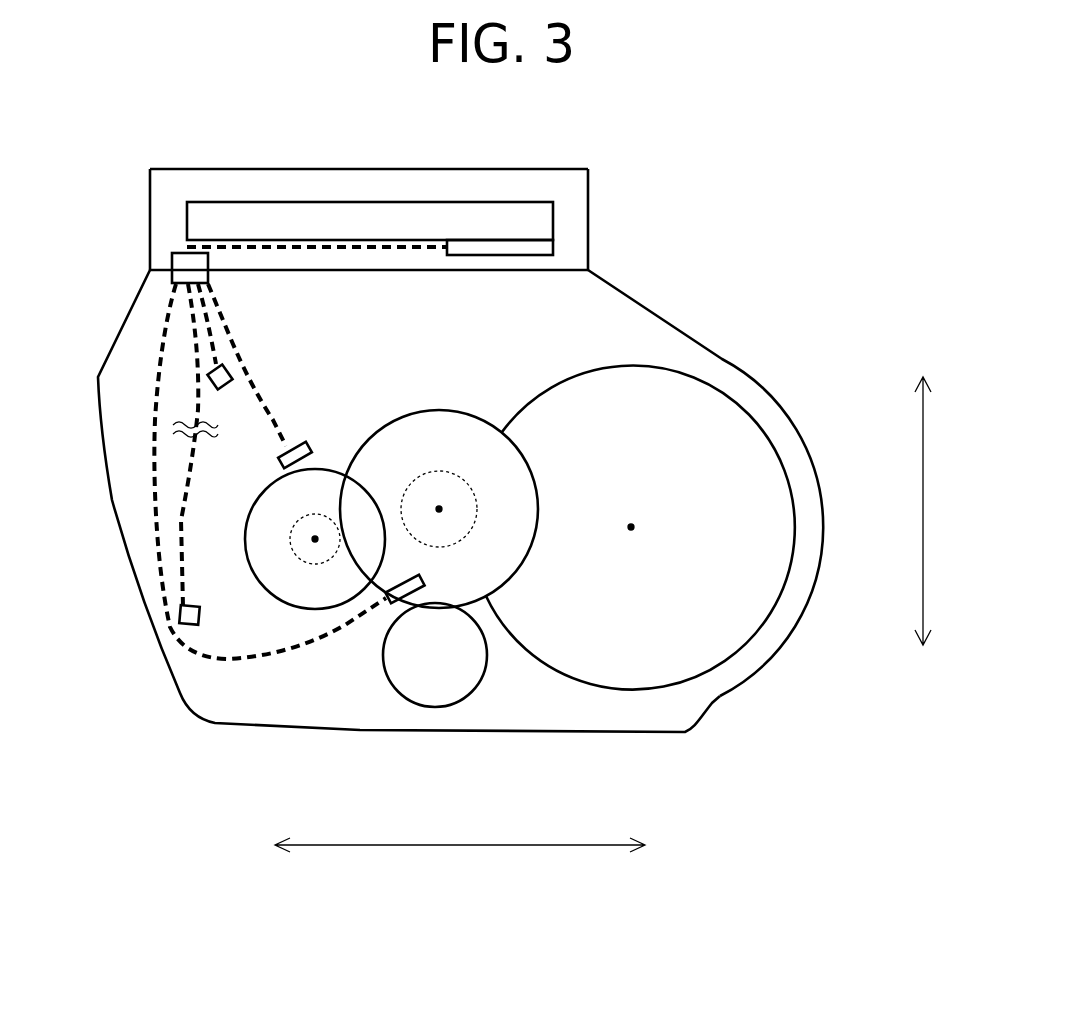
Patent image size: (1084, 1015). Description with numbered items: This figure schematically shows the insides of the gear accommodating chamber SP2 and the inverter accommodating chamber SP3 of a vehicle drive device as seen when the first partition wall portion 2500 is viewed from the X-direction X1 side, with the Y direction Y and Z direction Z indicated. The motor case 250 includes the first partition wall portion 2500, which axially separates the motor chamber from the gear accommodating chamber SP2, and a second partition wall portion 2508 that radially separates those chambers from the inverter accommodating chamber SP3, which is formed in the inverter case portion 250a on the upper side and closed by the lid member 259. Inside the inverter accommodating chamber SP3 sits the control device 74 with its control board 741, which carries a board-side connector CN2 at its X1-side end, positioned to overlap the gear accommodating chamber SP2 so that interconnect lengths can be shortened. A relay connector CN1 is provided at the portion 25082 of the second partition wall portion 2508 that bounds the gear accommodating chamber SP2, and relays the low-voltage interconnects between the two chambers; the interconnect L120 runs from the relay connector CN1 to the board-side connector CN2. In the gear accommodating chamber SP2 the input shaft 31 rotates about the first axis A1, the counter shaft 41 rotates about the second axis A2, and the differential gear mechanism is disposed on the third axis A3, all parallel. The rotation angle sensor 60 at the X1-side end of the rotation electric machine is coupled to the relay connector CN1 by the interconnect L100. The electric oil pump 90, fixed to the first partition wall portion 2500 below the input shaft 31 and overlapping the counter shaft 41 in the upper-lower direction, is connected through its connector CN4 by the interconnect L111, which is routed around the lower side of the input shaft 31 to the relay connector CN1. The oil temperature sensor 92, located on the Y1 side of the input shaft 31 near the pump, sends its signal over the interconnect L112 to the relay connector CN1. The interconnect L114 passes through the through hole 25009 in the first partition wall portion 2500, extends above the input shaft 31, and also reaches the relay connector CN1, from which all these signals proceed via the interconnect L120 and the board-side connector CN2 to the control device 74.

The lid member 259 is at (218, 168).
The portion of the second partition wall portion 25082 is at (322, 267).
The second partition wall portion 2508 is at (467, 186).
The control board 741 is at (495, 218).
The control device 74 is at (392, 180).
The inverter case portion 250a is at (590, 182).
The motor case 250 is at (688, 528).
The board-side connector CN2 is at (545, 250).
The inverter accommodating chamber SP3 is at (570, 250).
The interconnect L120 is at (388, 284).
The gear accommodating chamber SP2 is at (392, 332).
The relay connector CN1 is at (172, 262).
The interconnect L100 is at (215, 497).
The interconnect L111 is at (298, 650).
The interconnect L112 is at (198, 355).
The interconnect L114 is at (210, 338).
The through hole 25009 is at (220, 386).
The rotation angle sensor 60 is at (297, 444).
The oil temperature sensor 92 is at (180, 615).
The connector CN4 is at (393, 602).
The input shaft 31 is at (247, 597).
The first axis A1 is at (315, 540).
The counter shaft 41 is at (439, 474).
The second axis A2 is at (439, 506).
The electric oil pump 90 is at (472, 694).
The third axis A3 is at (631, 530).
The first partition wall portion 2500 is at (145, 535).
The Z direction Z is at (940, 511).
The Y direction Y is at (460, 858).